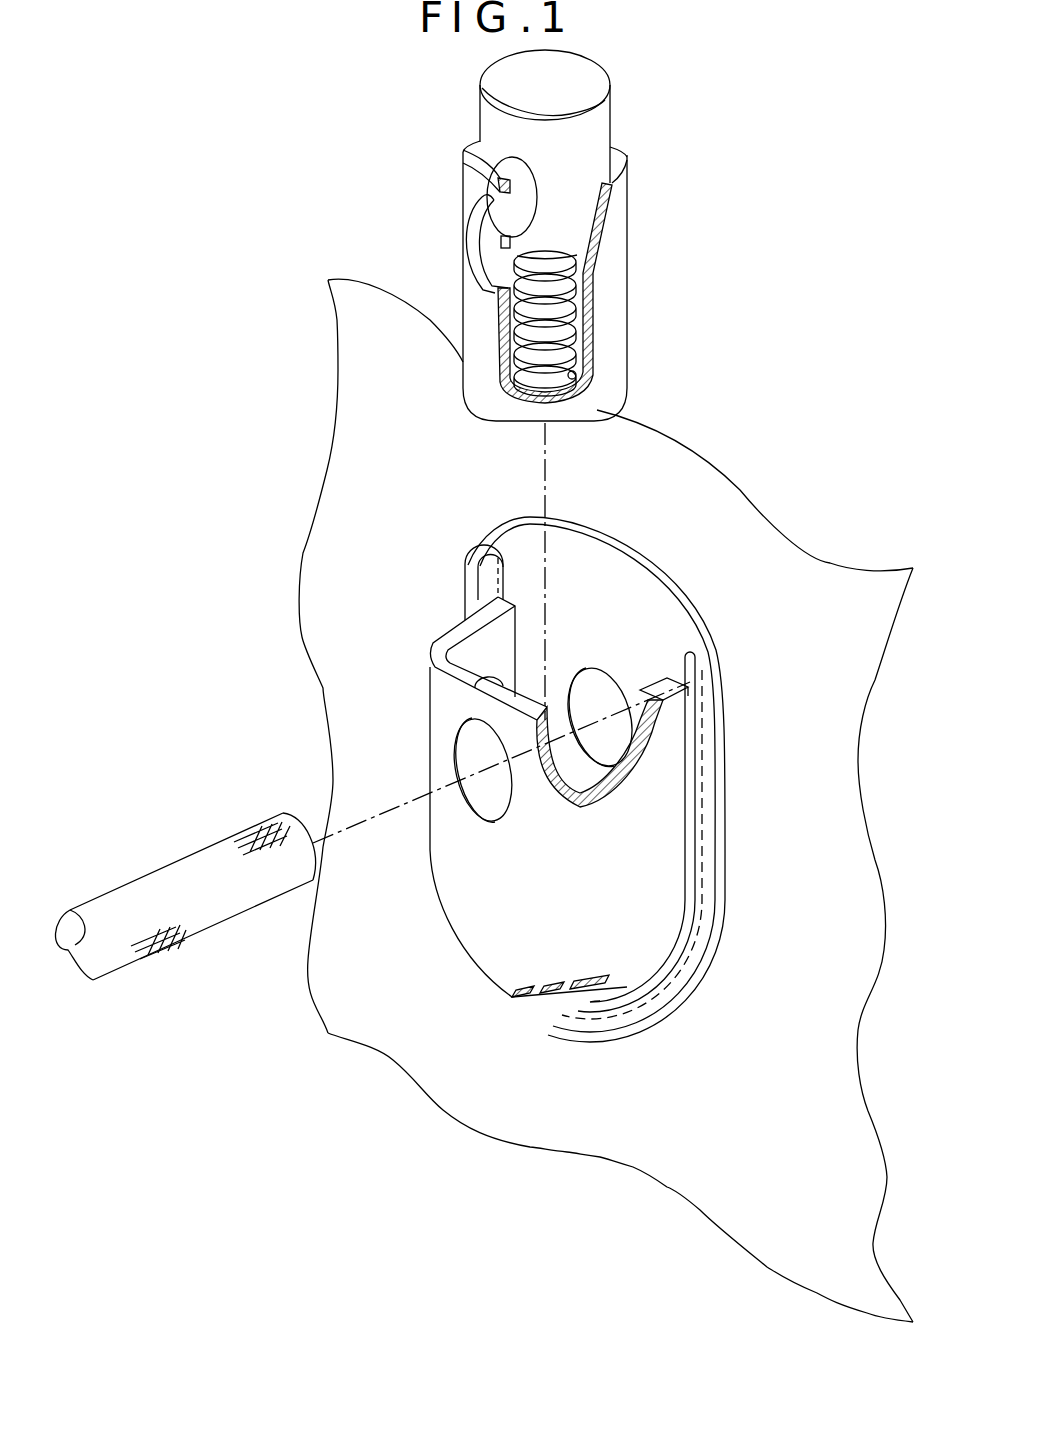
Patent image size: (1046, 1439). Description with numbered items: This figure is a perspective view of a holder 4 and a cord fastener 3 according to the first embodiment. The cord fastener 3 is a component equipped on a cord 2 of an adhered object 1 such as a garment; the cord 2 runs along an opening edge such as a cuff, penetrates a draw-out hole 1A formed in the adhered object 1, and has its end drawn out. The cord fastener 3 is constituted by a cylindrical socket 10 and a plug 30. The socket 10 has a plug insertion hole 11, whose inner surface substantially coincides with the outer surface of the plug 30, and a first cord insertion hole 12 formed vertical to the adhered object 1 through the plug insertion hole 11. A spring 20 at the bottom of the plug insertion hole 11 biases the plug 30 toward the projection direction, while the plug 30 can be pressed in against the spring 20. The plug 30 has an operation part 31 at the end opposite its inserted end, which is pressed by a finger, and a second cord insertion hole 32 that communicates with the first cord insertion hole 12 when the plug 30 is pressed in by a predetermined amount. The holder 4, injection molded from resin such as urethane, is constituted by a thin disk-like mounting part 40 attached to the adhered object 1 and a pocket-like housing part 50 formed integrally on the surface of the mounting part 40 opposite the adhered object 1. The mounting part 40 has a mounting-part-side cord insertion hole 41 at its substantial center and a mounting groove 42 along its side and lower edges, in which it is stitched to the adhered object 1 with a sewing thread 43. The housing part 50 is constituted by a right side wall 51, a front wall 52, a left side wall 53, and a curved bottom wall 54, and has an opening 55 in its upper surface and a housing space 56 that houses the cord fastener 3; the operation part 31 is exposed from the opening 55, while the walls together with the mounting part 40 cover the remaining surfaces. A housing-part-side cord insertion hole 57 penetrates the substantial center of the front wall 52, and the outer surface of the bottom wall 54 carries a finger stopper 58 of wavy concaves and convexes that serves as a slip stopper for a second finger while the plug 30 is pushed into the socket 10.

The adhered object 1 is at (830, 590).
The draw-out hole 1A is at (607, 673).
The cord 2 is at (115, 958).
The cord fastener 3 is at (568, 234).
The holder 4 is at (523, 808).
The socket 10 is at (603, 281).
The plug insertion hole 11 is at (597, 268).
The first cord insertion hole 12 is at (465, 253).
The spring 20 is at (565, 342).
The plug 30 is at (602, 153).
The operation part 31 is at (570, 72).
The second cord insertion hole 32 is at (463, 152).
The mounting part 40 is at (604, 771).
The mounting-part-side cord insertion hole 41 is at (663, 688).
The mounting groove 42 is at (705, 730).
The sewing thread 43 is at (700, 773).
The housing part 50 is at (523, 806).
The right side wall 51 is at (478, 655).
The front wall 52 is at (458, 908).
The left side wall 53 is at (637, 817).
The bottom wall 54 is at (628, 1000).
The opening 55 is at (533, 623).
The housing space 56 is at (503, 678).
The housing-part-side cord insertion hole 57 is at (455, 767).
The finger stopper 58 is at (545, 1008).